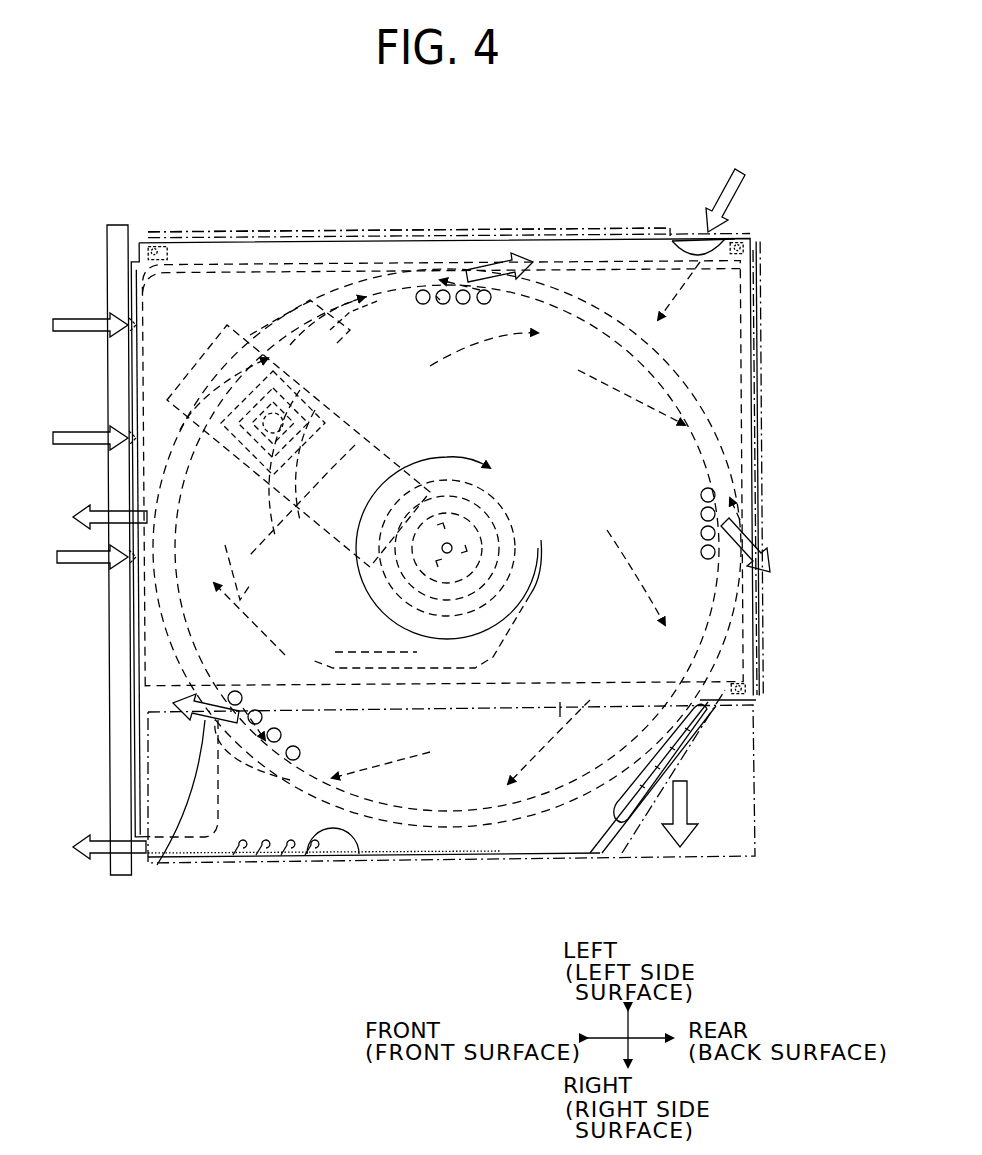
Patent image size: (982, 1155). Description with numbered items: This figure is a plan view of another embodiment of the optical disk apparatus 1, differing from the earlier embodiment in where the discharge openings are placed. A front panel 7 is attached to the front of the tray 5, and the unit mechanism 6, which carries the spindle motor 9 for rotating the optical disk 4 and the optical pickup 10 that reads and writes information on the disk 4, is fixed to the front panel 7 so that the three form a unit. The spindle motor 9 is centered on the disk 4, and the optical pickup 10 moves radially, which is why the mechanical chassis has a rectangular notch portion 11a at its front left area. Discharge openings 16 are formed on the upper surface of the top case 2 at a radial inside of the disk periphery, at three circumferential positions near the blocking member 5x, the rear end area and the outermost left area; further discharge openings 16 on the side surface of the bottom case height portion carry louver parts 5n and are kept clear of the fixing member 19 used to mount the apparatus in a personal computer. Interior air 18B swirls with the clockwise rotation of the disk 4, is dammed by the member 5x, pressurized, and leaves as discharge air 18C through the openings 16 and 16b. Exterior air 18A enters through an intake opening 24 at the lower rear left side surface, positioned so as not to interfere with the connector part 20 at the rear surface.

The optical disk apparatus 1 is at (419, 178).
The top case 2 is at (552, 835).
The optical disk 4 is at (546, 336).
The tray 5 is at (638, 300).
The louver part 5n is at (358, 855).
The blocking member 5x is at (167, 752).
The unit mechanism 6 is at (407, 357).
The front panel 7 is at (125, 650).
The spindle motor 9 is at (468, 537).
The optical pickup 10 is at (290, 373).
The notch portion 11a is at (340, 518).
The discharge openings 16 is at (420, 295).
The bottom ventilation holes 16b is at (238, 858).
The exterior air 18A is at (77, 322).
The interior air 18B is at (560, 717).
The discharge air 18C is at (487, 268).
The fixing member 19 is at (501, 231).
The connector part 20 is at (760, 606).
The intake opening 24 is at (702, 237).